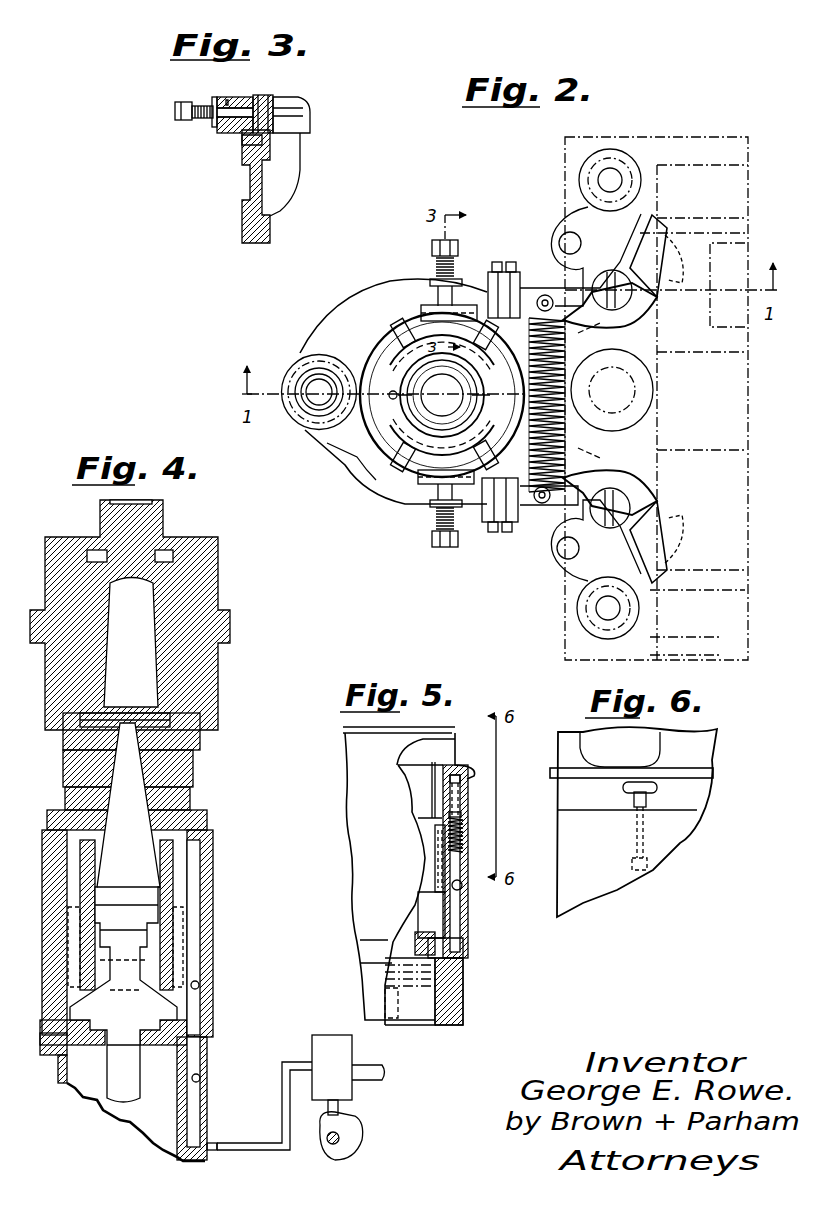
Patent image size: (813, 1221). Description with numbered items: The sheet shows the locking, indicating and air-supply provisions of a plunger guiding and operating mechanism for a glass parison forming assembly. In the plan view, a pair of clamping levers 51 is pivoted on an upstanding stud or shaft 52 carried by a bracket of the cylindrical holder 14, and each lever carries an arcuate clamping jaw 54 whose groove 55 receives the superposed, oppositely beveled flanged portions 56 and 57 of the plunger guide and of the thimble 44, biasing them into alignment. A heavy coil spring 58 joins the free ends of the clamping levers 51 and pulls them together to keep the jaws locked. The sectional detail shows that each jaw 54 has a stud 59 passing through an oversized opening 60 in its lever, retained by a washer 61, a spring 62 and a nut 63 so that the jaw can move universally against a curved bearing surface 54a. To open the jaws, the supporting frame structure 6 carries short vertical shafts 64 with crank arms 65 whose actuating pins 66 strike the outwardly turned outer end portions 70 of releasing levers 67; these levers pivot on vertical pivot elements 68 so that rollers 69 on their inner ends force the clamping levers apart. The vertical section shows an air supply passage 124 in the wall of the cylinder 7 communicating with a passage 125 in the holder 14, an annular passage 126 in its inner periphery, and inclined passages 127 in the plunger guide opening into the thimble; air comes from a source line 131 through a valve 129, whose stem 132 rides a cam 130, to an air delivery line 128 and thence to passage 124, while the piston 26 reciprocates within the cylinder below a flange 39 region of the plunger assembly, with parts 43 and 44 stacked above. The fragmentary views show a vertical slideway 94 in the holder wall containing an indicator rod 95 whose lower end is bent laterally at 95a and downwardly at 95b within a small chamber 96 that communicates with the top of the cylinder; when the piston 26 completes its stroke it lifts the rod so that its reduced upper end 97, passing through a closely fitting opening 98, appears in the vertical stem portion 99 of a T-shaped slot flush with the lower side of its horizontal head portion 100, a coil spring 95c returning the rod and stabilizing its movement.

In FIG. 2, the supporting frame structure 6 is at (702, 170).
In FIG. 4, the cylinder 7 is at (205, 1120).
In FIG. 5, the cylinder 7 is at (465, 1013).
In FIG. 4, the cylindrical holder 14 is at (215, 930).
In FIG. 5, the cylindrical holder 14 is at (399, 876).
In FIG. 5, the piston 26 is at (413, 1026).
In FIG. 4, the piston flange 39 is at (80, 996).
In FIG. 4, the ring 43 is at (192, 795).
In FIG. 4, the thimble 44 is at (192, 780).
In FIG. 3, the clamping levers 51 is at (230, 100).
In FIG. 2, the clamping levers 51 is at (395, 302).
In FIG. 2, the upstanding stud or shaft 52 is at (314, 400).
In FIG. 3, the arcuate clamping jaws 54 is at (262, 97).
In FIG. 2, the arcuate clamping jaws 54 is at (415, 325).
In FIG. 3, the curved bearing surface 54a is at (245, 160).
In FIG. 3, the grooves 55 is at (280, 150).
In FIG. 2, the grooves 55 is at (370, 470).
In FIG. 3, the flanged portion of the plunger guide 56 is at (285, 112).
In FIG. 3, the flanged portion of the thimble 57 is at (277, 105).
In FIG. 2, the heavy coil spring 58 is at (567, 418).
In FIG. 3, the stud 59 is at (226, 133).
In FIG. 3, the oversized opening 60 is at (240, 135).
In FIG. 3, the washer 61 is at (214, 126).
In FIG. 3, the spring 62 is at (200, 118).
In FIG. 3, the nut 63 is at (178, 108).
In FIG. 2, the short vertical shafts 64 is at (612, 175).
In FIG. 2, the crank arms 65 is at (576, 209).
In FIG. 2, the actuating pins 66 is at (568, 240).
In FIG. 2, the releasing levers 67 is at (650, 300).
In FIG. 2, the vertical pivot elements 68 is at (622, 320).
In FIG. 2, the rollers 69 is at (580, 333).
In FIG. 2, the outwardly turned outer end portions 70 is at (666, 230).
In FIG. 5, the vertical slideway 94 is at (463, 888).
In FIG. 5, the indicator rod 95 is at (462, 905).
In FIG. 5, the laterally bent lower end portion 95a is at (462, 956).
In FIG. 5, the downwardly bent end portion 95b is at (463, 972).
In FIG. 5, the coil spring 95c is at (464, 836).
In FIG. 5, the small chamber 96 is at (455, 939).
In FIG. 5, the reduced upper end portion 97 is at (462, 782).
In FIG. 6, the reduced upper end portion 97 is at (637, 803).
In FIG. 5, the vertical opening 98 is at (463, 812).
In FIG. 5, the vertical stem portion 99 is at (462, 792).
In FIG. 6, the vertical stem portion 99 is at (648, 798).
In FIG. 5, the horizontal head portion 100 is at (470, 778).
In FIG. 6, the horizontal head portion 100 is at (630, 790).
In FIG. 4, the air supply passage 124 is at (207, 1078).
In FIG. 4, the passage 125 is at (205, 985).
In FIG. 4, the annular passage 126 is at (202, 830).
In FIG. 4, the inclined passages 127 is at (192, 815).
In FIG. 4, the air delivery line 128 is at (238, 1146).
In FIG. 4, the valve 129 is at (340, 1018).
In FIG. 4, the cam 130 is at (358, 1146).
In FIG. 4, the air source line 131 is at (362, 1068).
In FIG. 4, the valve stem 132 is at (345, 1111).